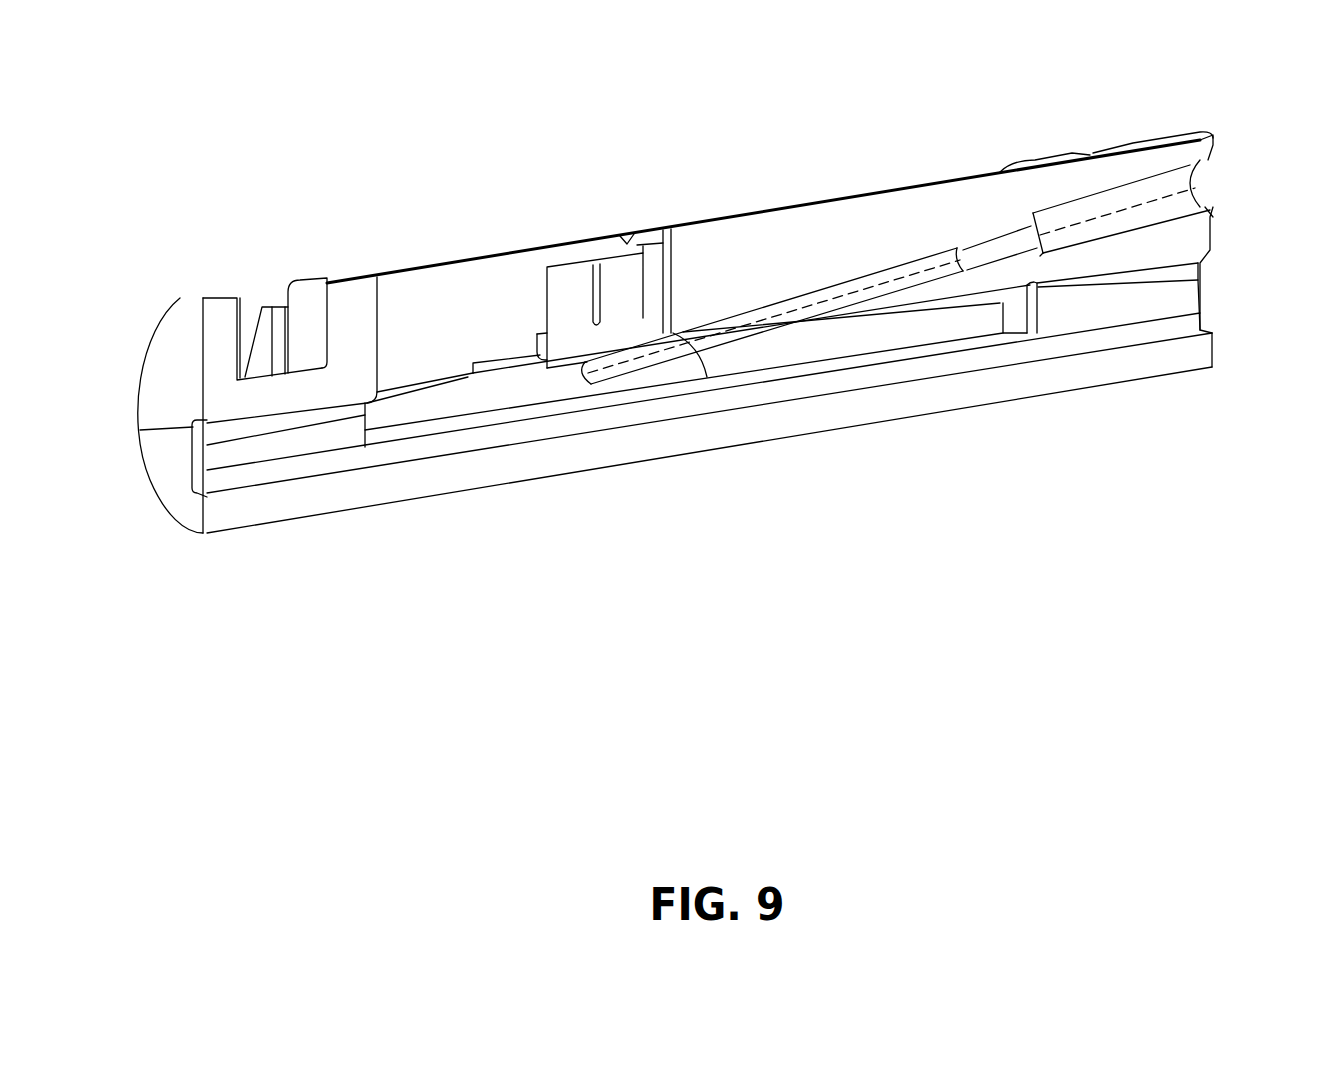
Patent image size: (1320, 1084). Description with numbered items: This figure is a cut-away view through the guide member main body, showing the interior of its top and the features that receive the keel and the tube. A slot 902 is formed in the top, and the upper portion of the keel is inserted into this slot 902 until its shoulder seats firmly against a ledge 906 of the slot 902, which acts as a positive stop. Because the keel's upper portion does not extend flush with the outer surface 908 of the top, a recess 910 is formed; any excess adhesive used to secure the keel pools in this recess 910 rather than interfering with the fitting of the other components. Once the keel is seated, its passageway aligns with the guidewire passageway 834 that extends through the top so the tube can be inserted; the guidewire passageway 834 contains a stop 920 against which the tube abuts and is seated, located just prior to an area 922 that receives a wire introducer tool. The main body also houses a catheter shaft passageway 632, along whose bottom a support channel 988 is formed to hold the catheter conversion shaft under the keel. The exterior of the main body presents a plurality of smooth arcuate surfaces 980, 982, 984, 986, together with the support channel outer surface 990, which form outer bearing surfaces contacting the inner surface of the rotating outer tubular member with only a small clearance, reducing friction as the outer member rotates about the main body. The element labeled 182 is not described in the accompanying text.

The pivot rod 182 is at (612, 385).
The catheter shaft passageway 632 is at (1190, 297).
The guidewire passageway 834 is at (1140, 203).
The slot 902 is at (546, 289).
The ledge 906 is at (535, 340).
The outer surface 908 is at (600, 238).
The recess 910 is at (623, 245).
The stop 920 is at (960, 243).
The area 922 is at (1058, 240).
The arcuate surface 980 is at (232, 296).
The arcuate surface 982 is at (340, 272).
The arcuate surface 984 is at (1037, 150).
The arcuate surface 986 is at (1180, 130).
The support channel 988 is at (967, 358).
The support channel outer surface 990 is at (410, 500).